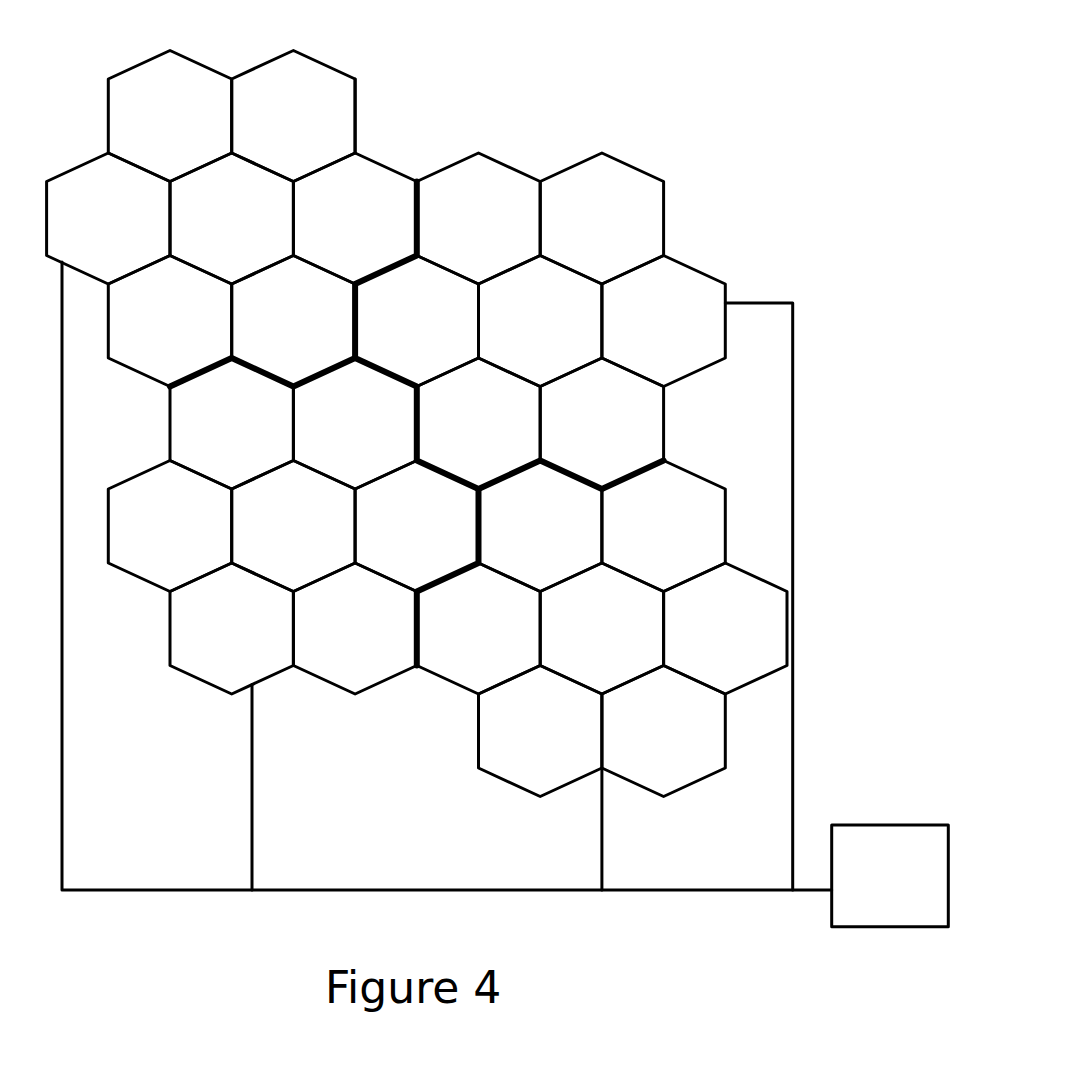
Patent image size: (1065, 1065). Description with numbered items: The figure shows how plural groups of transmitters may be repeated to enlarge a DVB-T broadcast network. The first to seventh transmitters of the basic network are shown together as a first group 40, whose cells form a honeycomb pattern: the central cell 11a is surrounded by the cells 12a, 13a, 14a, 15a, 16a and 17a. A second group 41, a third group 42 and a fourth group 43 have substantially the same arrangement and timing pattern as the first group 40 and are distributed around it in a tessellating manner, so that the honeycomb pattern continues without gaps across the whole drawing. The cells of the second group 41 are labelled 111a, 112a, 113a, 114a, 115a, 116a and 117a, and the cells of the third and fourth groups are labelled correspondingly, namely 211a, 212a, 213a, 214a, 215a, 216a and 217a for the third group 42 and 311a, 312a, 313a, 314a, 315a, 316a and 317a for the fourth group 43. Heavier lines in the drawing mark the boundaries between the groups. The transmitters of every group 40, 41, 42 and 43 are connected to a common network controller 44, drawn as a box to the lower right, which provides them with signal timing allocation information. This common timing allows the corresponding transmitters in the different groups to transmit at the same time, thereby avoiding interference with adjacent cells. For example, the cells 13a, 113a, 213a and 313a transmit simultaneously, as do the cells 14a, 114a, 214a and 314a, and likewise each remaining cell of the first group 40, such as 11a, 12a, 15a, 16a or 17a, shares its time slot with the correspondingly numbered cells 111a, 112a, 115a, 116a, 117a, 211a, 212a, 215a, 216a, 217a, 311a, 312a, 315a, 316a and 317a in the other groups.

The cell 212a is at (169, 116).
The cell 217a is at (293, 116).
The cell 213a is at (108, 218).
The cell 211a is at (231, 218).
The cell 216a is at (354, 218).
The cell 112a is at (478, 218).
The cell 117a is at (601, 218).
The cell 214a is at (169, 321).
The cell 215a is at (293, 321).
The cell 113a is at (416, 321).
The cell 111a is at (540, 321).
The cell 116a is at (663, 321).
The cell 312a is at (231, 423).
The cell 317a is at (354, 423).
The cell 114a is at (478, 423).
The cell 115a is at (601, 423).
The cell 313a is at (169, 526).
The cell 311a is at (293, 526).
The cell 316a is at (416, 526).
The cell 12a is at (540, 526).
The cell 17a is at (663, 526).
The cell 314a is at (231, 628).
The cell 315a is at (354, 628).
The cell 13a is at (478, 628).
The cell 11a is at (601, 628).
The cell 16a is at (725, 628).
The cell 14a is at (540, 731).
The cell 15a is at (663, 731).
The first group 40 is at (487, 707).
The second group 41 is at (712, 282).
The third group 42 is at (350, 120).
The fourth group 43 is at (233, 694).
The common network controller 44 is at (892, 928).